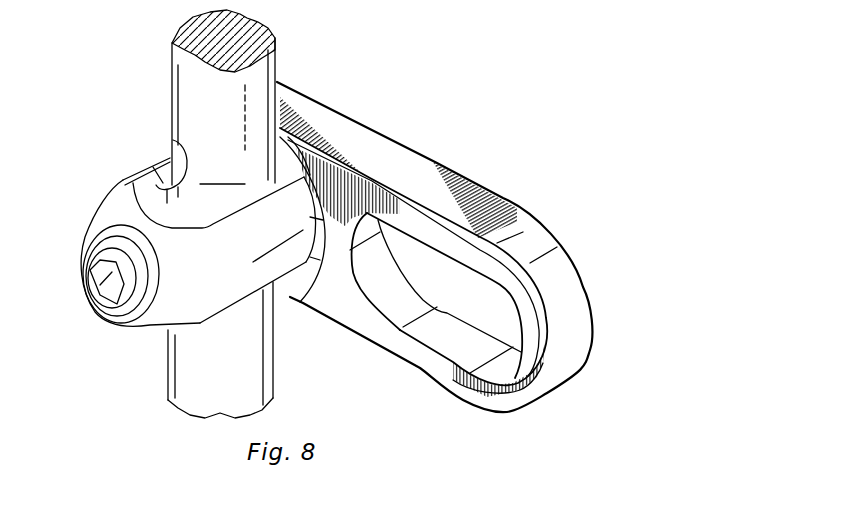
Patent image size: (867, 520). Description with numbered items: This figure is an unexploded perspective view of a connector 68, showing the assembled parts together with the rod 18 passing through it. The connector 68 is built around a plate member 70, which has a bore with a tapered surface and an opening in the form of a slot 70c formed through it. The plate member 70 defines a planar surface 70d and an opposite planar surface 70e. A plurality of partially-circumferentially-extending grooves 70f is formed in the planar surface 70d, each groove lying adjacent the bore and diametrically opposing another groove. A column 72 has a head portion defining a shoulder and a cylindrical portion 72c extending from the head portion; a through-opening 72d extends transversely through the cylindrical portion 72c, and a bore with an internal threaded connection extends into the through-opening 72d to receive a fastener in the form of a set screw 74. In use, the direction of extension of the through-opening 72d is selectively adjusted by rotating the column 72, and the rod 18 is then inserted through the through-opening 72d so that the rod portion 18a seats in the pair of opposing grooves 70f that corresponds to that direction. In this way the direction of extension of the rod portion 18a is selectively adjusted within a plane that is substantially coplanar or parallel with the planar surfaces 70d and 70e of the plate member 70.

The rod 18 is at (165, 371).
The rod portion 18a is at (222, 169).
The connector 68 is at (628, 256).
The plate member 70 is at (597, 334).
The slot 70c is at (462, 355).
The planar surface 70d is at (413, 360).
The planar surface 70e is at (412, 153).
The partially-circumferentially-extending grooves 70f is at (302, 285).
The column 72 is at (100, 208).
The cylindrical portion 72c is at (243, 283).
The through-opening 72d is at (172, 150).
The set screw 74 is at (83, 284).